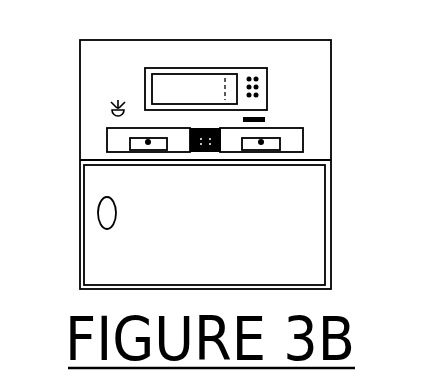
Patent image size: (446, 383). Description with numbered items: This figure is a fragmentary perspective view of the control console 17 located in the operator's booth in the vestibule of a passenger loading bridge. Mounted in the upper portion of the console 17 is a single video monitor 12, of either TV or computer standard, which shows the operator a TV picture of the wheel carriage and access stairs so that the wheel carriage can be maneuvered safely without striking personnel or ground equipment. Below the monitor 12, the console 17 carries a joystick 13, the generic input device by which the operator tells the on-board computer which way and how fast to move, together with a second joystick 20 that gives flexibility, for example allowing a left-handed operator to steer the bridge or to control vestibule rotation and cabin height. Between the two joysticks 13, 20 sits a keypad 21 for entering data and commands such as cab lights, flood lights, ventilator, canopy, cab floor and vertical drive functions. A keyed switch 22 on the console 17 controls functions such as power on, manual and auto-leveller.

The video monitor 12 is at (188, 80).
The joystick 13 is at (262, 141).
The console 17 is at (287, 40).
The second joystick 20 is at (148, 140).
The keypad 21 is at (212, 152).
The keyed switch 22 is at (112, 110).